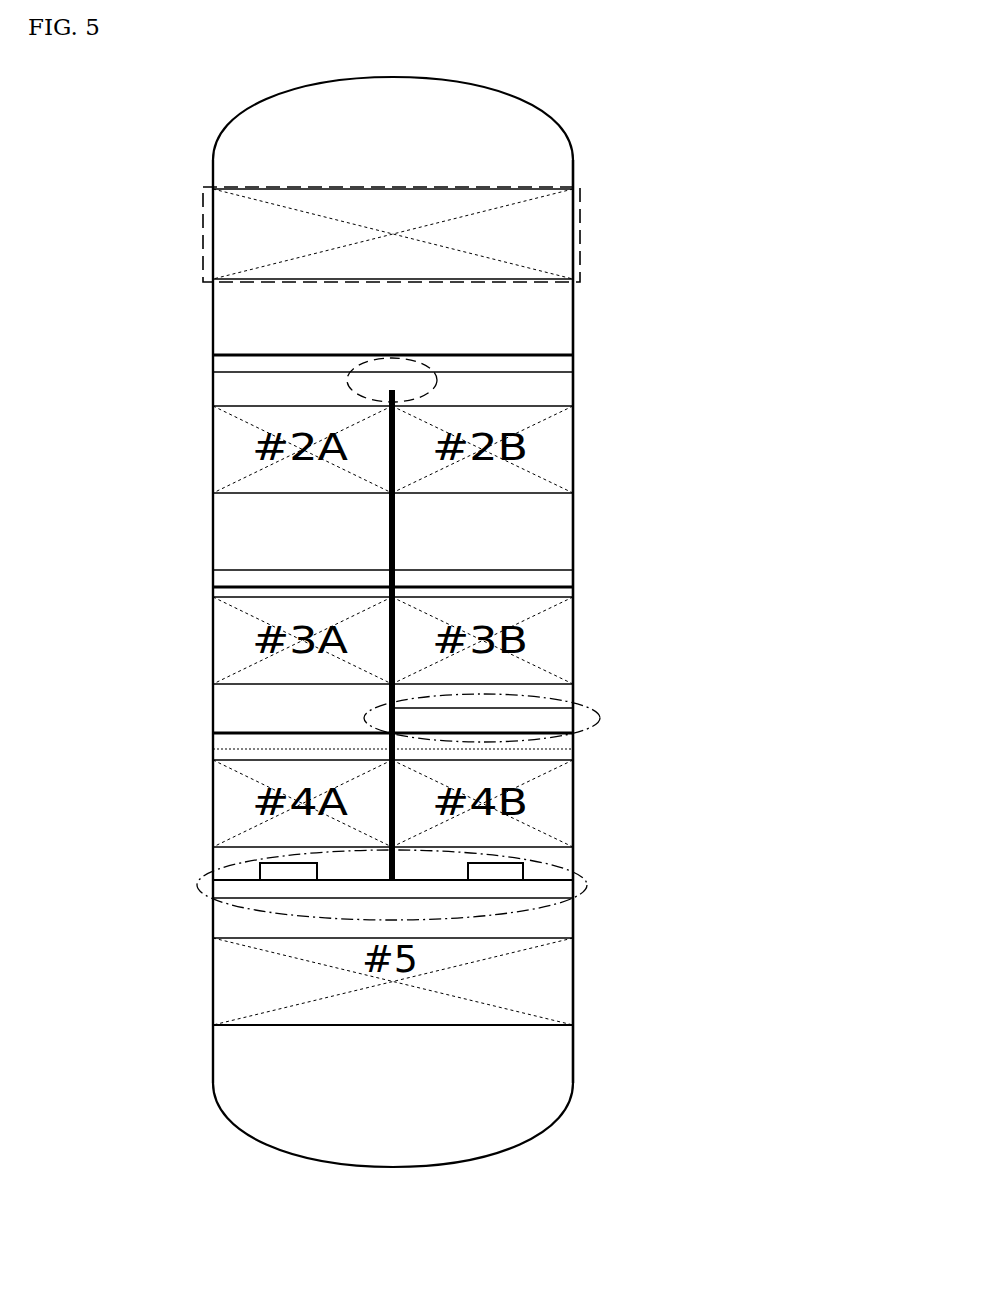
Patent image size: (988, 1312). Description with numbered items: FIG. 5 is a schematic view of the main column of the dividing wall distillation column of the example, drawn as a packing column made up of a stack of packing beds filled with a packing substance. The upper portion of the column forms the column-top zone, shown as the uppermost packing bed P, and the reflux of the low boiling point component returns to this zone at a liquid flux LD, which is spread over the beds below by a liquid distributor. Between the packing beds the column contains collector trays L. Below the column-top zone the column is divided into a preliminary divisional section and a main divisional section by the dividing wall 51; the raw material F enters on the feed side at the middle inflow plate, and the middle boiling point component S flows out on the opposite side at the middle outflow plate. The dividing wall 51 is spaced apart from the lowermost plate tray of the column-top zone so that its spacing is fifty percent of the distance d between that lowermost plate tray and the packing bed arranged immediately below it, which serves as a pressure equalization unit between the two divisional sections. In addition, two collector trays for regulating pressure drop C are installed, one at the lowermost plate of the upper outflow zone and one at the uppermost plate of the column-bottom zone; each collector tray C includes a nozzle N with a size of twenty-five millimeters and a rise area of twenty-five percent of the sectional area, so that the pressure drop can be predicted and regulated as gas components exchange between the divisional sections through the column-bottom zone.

The packing section / bed #1 region P is at (582, 228).
The liquid flux LD is at (276, 308).
The liquid collector / tray L is at (540, 345).
The distance between the lowermost plate tray of the column-top zone and the column d is at (198, 372).
The raw material F is at (276, 523).
The partition wall 51 is at (396, 535).
The collector tray for regulating pressure drop C is at (585, 690).
The middle boiling point component S is at (392, 722).
The nozzle N is at (246, 864).